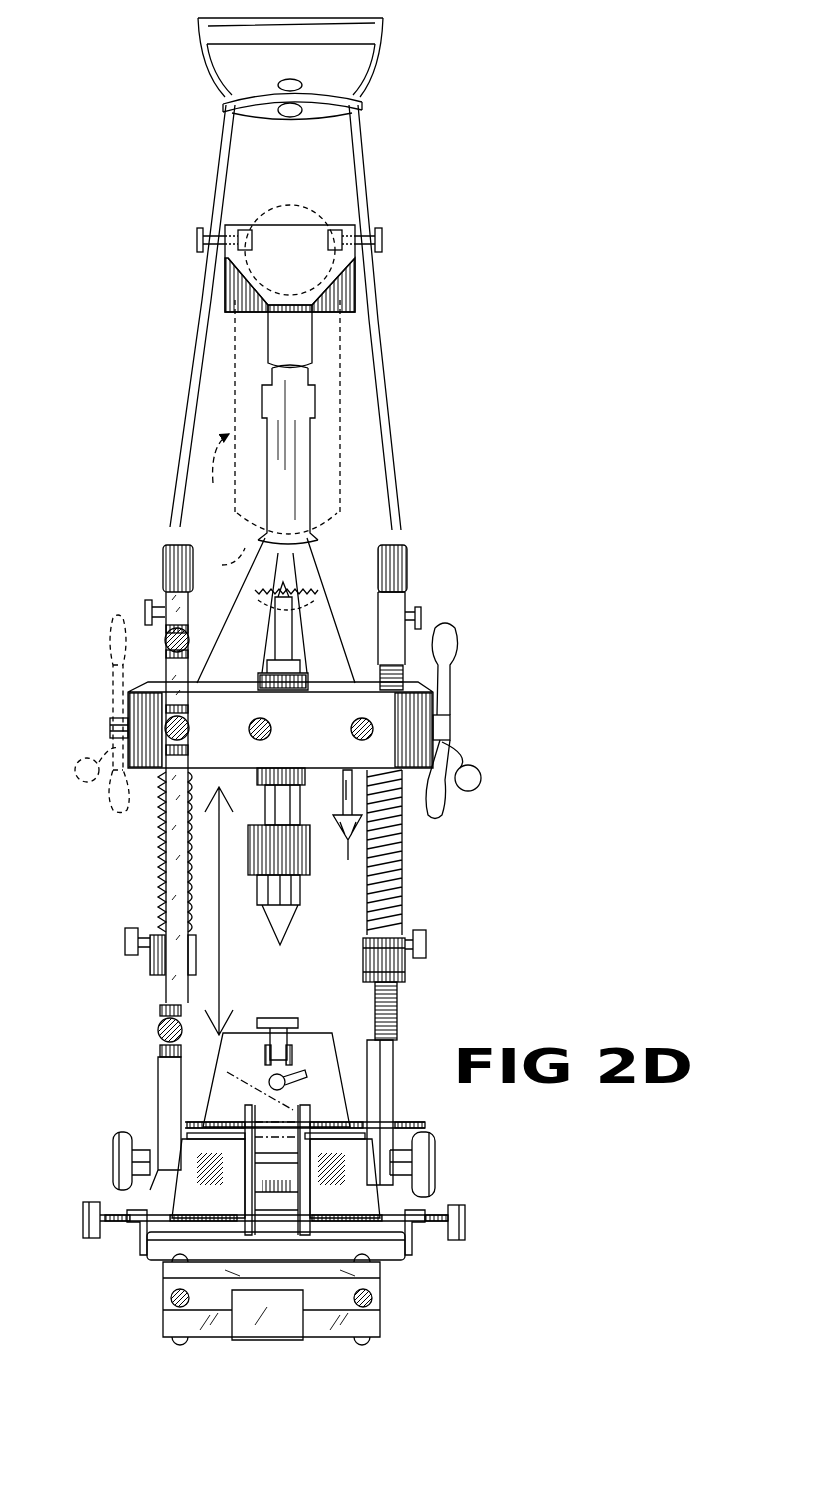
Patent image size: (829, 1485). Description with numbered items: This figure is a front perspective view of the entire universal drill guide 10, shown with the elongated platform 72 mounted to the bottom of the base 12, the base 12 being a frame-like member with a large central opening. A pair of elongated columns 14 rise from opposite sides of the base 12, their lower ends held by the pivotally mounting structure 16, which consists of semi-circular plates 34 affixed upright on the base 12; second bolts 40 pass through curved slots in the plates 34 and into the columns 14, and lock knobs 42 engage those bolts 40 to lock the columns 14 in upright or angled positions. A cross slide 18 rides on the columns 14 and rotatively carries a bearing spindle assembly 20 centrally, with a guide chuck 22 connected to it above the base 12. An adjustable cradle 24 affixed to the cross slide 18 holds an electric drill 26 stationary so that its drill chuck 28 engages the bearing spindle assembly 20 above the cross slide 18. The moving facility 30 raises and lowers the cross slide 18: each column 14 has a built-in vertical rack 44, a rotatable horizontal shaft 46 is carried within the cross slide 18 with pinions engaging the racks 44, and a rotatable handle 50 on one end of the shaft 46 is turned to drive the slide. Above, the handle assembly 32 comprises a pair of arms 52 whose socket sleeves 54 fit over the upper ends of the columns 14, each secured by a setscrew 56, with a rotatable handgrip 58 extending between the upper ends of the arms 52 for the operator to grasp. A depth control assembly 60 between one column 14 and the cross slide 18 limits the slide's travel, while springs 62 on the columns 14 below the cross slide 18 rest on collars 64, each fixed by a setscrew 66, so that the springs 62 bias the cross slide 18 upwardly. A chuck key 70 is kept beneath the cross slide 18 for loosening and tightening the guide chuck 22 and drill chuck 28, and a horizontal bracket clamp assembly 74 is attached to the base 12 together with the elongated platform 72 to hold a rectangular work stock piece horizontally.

The universal drill guide 10 is at (58, 600).
The base 12 is at (380, 1297).
The elongated columns 14 is at (158, 1082).
The pivotally mounting structure 16 is at (372, 1135).
The cross slide 18 is at (203, 662).
The bearing spindle assembly 20 is at (288, 608).
The guide chuck 22 is at (300, 905).
The adjustable cradle 24 is at (300, 462).
The electric drill 26 is at (212, 478).
The drill chuck 28 is at (225, 548).
The moving facility 30 is at (457, 717).
The handle assembly 32 is at (214, 178).
The semi-circular plates 34 is at (175, 1183).
The second bolts 40 is at (362, 1160).
The lock knobs 42 is at (437, 1153).
The vertical rack 44 is at (396, 1005).
The rotatable horizontal shaft 46 is at (110, 728).
The rotatable handle 50 is at (72, 784).
The arms 52 is at (198, 365).
The socket sleeves 54 is at (177, 565).
The setscrews 56 is at (146, 610).
The rotatable handgrip 58 is at (222, 78).
The depth control assembly 60 is at (163, 1000).
The springs 62 is at (155, 860).
The collars 64 is at (152, 960).
The setscrews 66 is at (126, 940).
The chuck key 70 is at (343, 836).
The elongated platform 72 is at (325, 1040).
The horizontal bracket clamp assembly 74 is at (150, 1246).